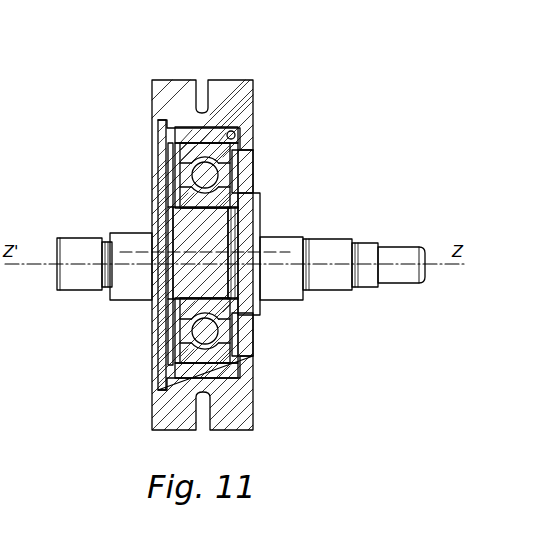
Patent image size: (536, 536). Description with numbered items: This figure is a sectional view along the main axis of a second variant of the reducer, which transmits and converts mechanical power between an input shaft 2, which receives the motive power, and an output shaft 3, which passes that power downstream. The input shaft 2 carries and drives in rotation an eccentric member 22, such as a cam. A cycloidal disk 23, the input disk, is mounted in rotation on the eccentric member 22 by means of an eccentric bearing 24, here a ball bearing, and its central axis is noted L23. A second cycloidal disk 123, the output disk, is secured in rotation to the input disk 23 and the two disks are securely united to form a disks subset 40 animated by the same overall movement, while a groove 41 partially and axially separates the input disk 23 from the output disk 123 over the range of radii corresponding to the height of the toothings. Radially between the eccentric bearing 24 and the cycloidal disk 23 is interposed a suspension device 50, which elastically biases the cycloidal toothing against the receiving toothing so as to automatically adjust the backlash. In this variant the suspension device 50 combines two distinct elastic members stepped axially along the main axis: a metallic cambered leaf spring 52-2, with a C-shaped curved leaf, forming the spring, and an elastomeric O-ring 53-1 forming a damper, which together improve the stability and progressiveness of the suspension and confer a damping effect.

The disks subset 40 is at (186, 80).
The second cycloidal disk 123 is at (172, 98).
The cycloidal disk 23 is at (235, 90).
The groove 41 is at (204, 414).
The suspension device 50 is at (226, 119).
The eccentric bearing 24 is at (172, 148).
The eccentric member 22 is at (180, 218).
The central axis of the cycloidal disk L23 is at (251, 247).
The input shaft 2 is at (395, 256).
The output shaft 3 is at (82, 250).
The cambered leaf spring 52-2 is at (162, 378).
The O-ring 53-1 is at (240, 365).